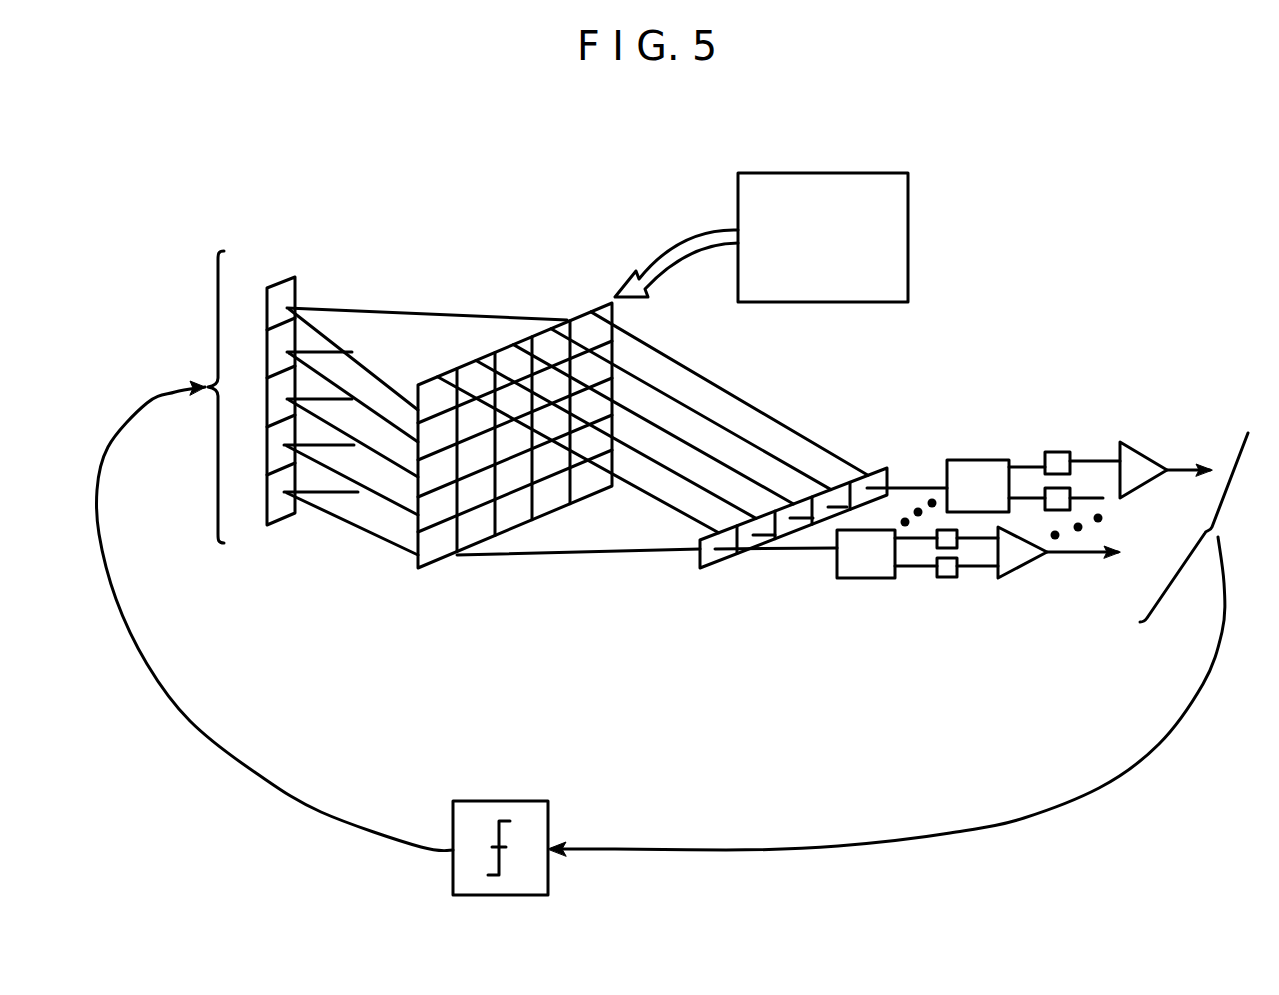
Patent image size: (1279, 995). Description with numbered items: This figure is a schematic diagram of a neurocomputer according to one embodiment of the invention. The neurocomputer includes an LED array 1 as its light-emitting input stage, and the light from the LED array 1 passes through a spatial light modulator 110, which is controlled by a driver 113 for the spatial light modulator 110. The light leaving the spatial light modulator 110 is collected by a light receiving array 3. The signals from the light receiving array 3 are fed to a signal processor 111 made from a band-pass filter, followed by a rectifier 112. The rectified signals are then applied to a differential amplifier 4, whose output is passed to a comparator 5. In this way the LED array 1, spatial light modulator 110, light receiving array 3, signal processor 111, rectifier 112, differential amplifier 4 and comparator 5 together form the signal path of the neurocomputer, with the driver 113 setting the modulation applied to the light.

The LED array 1 is at (296, 277).
The spatial light modulator 110 is at (603, 311).
The driver 113 is at (908, 203).
The light receiving array 3 is at (881, 466).
The signal processor 111 is at (977, 460).
The rectifier 112 is at (1058, 452).
The differential amplifier 4 is at (1138, 452).
The comparator 5 is at (500, 801).